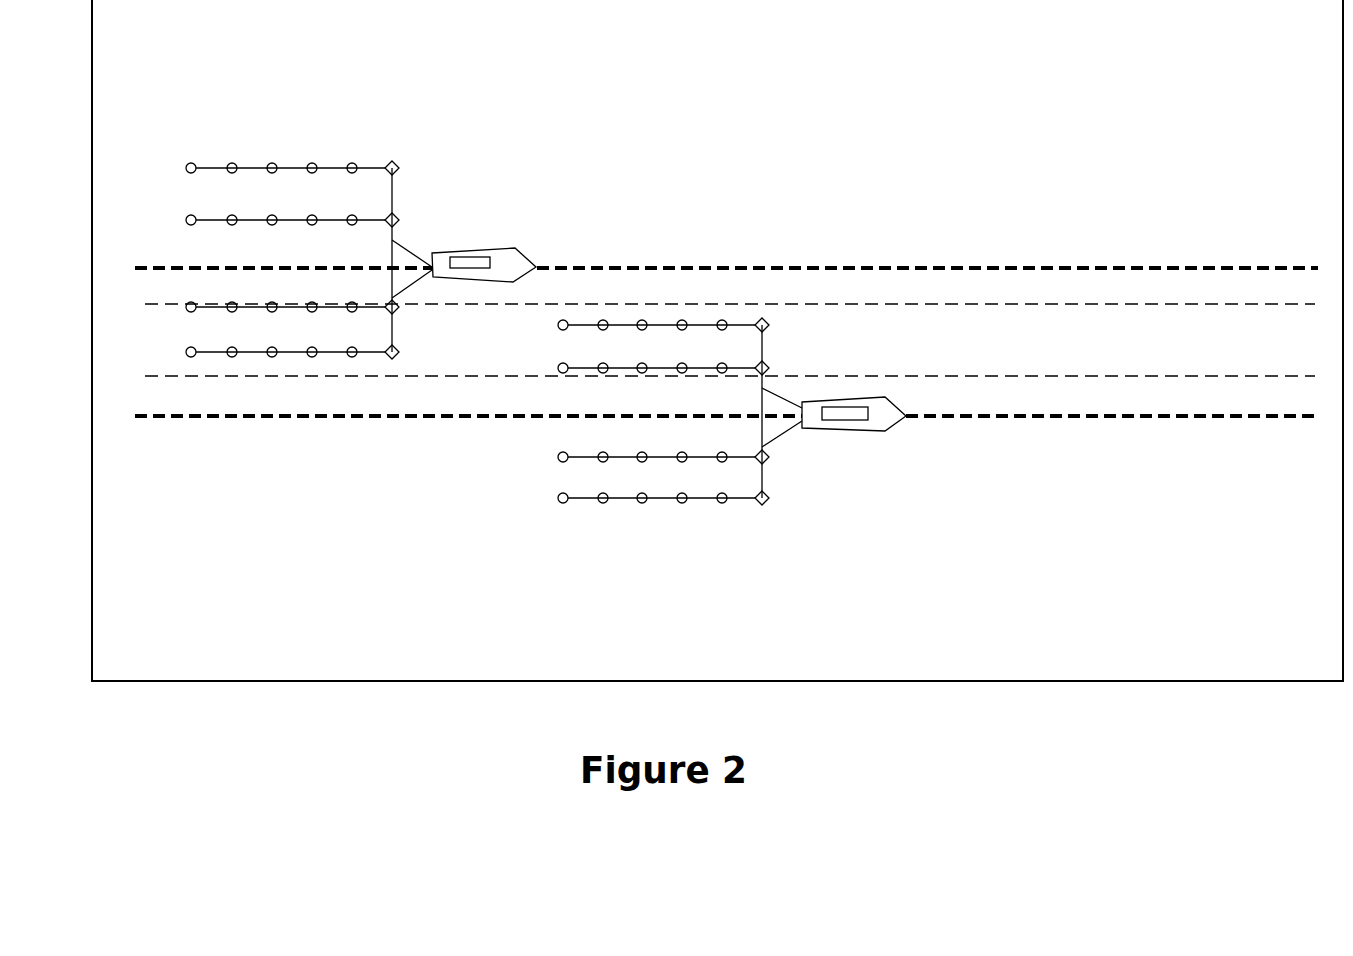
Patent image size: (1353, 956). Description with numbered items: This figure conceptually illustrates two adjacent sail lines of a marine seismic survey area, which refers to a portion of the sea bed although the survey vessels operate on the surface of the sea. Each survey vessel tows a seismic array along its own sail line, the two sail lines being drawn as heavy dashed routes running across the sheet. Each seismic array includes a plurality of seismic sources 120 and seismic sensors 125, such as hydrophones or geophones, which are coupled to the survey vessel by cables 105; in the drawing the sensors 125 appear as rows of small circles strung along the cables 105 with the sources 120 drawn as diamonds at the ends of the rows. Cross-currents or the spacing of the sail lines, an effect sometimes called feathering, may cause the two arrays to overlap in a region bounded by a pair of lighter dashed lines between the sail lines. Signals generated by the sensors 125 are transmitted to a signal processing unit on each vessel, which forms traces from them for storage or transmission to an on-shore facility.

The cables 105 is at (372, 166).
The seismic sources 120 is at (394, 160).
The seismic sensors 125 is at (351, 162).